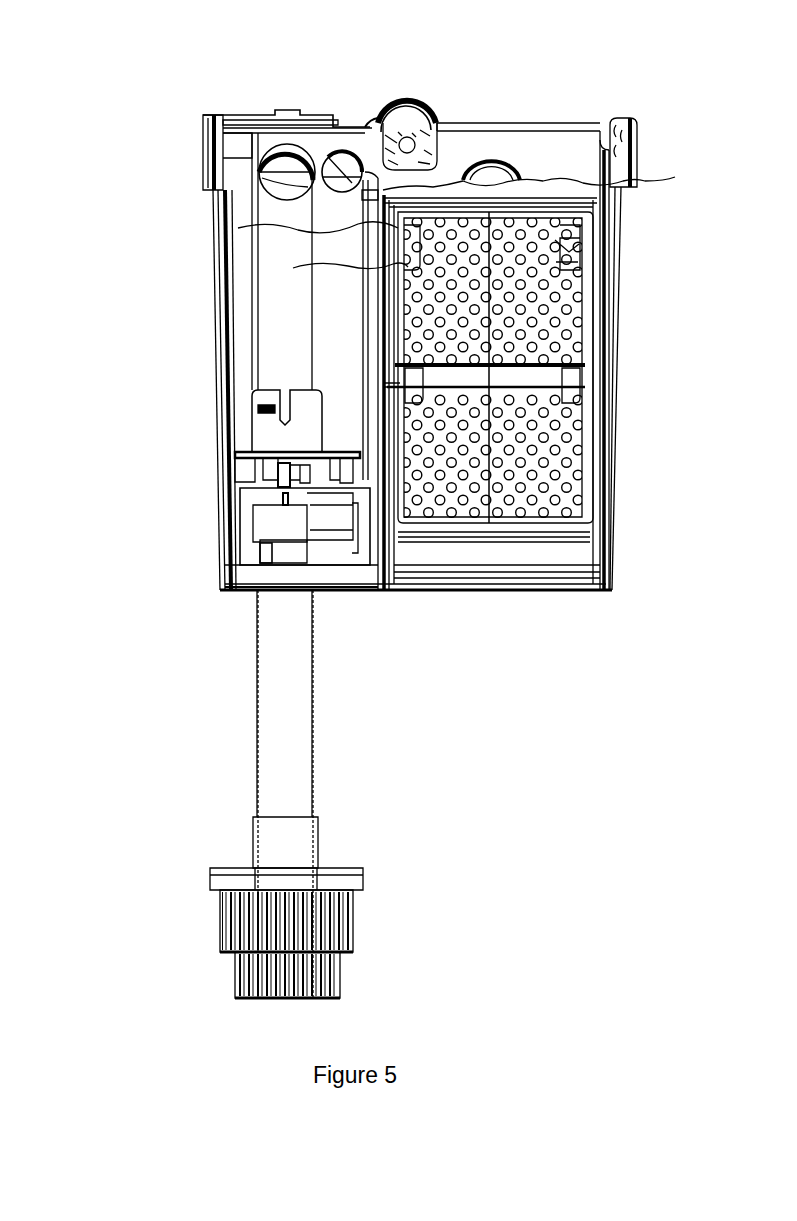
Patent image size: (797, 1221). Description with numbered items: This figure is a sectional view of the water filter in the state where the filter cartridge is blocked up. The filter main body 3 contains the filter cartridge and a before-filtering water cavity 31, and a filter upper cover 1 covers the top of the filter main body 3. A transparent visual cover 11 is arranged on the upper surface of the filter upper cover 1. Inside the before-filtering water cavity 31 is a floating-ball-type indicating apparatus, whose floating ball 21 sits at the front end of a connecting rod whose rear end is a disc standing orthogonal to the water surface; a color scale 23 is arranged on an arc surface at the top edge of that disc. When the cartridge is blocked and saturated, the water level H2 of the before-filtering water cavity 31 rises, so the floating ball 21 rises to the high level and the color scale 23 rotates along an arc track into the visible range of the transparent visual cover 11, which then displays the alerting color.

The filter upper cover 1 is at (201, 117).
The transparent visual cover 11 is at (378, 108).
The color scale 23 is at (417, 110).
The water level of the before-filtering water cavity when the filter cartridge is bl H2 is at (225, 186).
The floating ball 21 is at (322, 191).
The filter main body 3 is at (216, 325).
The before-filtering water cavity 31 is at (287, 361).